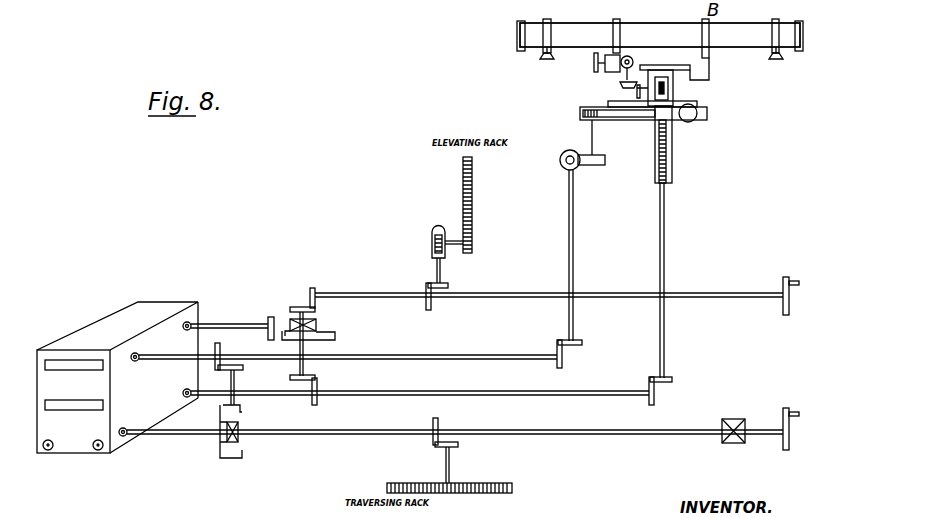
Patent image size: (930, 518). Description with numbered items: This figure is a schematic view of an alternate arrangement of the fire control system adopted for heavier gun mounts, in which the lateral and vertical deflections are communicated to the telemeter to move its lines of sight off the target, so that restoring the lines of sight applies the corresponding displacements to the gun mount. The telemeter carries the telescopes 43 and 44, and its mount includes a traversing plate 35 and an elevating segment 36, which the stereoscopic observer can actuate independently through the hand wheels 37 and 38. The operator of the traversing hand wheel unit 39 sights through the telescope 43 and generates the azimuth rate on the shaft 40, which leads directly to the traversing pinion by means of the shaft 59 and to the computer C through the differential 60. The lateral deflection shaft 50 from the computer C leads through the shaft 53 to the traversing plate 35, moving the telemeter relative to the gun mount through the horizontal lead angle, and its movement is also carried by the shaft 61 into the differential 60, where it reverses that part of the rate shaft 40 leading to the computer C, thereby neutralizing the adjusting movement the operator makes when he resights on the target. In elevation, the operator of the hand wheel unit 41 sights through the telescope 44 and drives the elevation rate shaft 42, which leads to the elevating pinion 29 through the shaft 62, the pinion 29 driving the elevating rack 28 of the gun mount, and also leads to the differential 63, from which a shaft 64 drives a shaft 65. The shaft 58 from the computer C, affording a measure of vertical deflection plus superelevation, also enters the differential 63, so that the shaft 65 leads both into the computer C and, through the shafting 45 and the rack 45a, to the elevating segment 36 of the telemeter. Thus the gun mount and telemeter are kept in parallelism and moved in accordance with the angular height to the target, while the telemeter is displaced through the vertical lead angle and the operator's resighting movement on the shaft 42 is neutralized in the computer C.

The elevating segment 36 is at (640, 19).
The telescope 43 is at (545, 58).
The telescope 44 is at (774, 58).
The hand wheel 38 is at (600, 68).
The traversing plate 35 is at (632, 122).
The hand wheel 37 is at (690, 123).
The rack 45a is at (672, 182).
The shafting 45 is at (667, 242).
The shaft 53 is at (573, 272).
The elevating rack 28 is at (474, 206).
The elevating pinion 29 is at (473, 243).
The shaft 62 is at (432, 264).
The computer C is at (158, 304).
The shaft 58 is at (228, 323).
The lateral deflection shaft 50 is at (187, 361).
The shaft 65 is at (288, 399).
The azimuth rate shaft 40 is at (575, 422).
The elevation rate shaft 42 is at (708, 297).
The mount elevating hand wheel unit 41 is at (784, 276).
The mount traversing hand wheel unit 39 is at (784, 406).
The differential 63 is at (322, 337).
The shaft 64 is at (308, 368).
The shaft 61 is at (237, 391).
The differential 60 is at (236, 436).
The shaft 59 is at (456, 469).